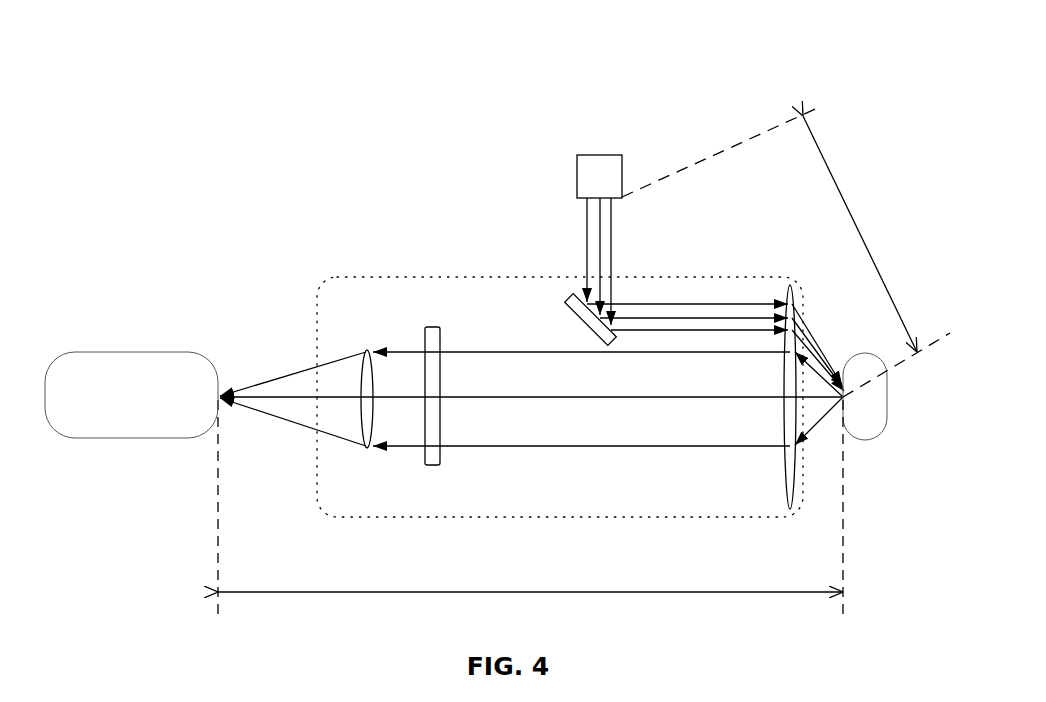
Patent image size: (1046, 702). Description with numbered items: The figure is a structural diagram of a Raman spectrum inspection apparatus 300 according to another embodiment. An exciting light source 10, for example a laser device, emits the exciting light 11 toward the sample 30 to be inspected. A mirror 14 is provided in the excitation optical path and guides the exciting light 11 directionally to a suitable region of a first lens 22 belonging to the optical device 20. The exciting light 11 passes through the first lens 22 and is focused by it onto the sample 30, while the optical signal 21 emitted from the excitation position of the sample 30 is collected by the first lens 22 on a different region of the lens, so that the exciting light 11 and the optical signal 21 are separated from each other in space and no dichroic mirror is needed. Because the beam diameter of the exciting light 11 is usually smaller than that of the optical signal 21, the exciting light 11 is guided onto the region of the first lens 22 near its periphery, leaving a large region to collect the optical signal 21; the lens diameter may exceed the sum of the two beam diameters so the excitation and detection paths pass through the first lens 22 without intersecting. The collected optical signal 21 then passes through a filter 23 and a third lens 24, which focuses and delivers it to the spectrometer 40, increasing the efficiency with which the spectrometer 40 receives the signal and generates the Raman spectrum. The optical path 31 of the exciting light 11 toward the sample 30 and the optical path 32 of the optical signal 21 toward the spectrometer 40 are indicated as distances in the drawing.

The Raman spectrum inspection apparatus 300 is at (570, 41).
The exciting light source 10 is at (598, 155).
The exciting light 11 is at (587, 260).
The mirror 14 is at (580, 315).
The optical device 20 is at (422, 289).
The optical signal 21 is at (665, 422).
The first lens 22 is at (787, 472).
The filter 23 is at (432, 407).
The third lens 24 is at (360, 422).
The sample to be inspected 30 is at (885, 417).
The optical path of the exciting light 31 is at (786, 251).
The optical path of the optical signal 32 is at (530, 510).
The spectrometer 40 is at (182, 352).